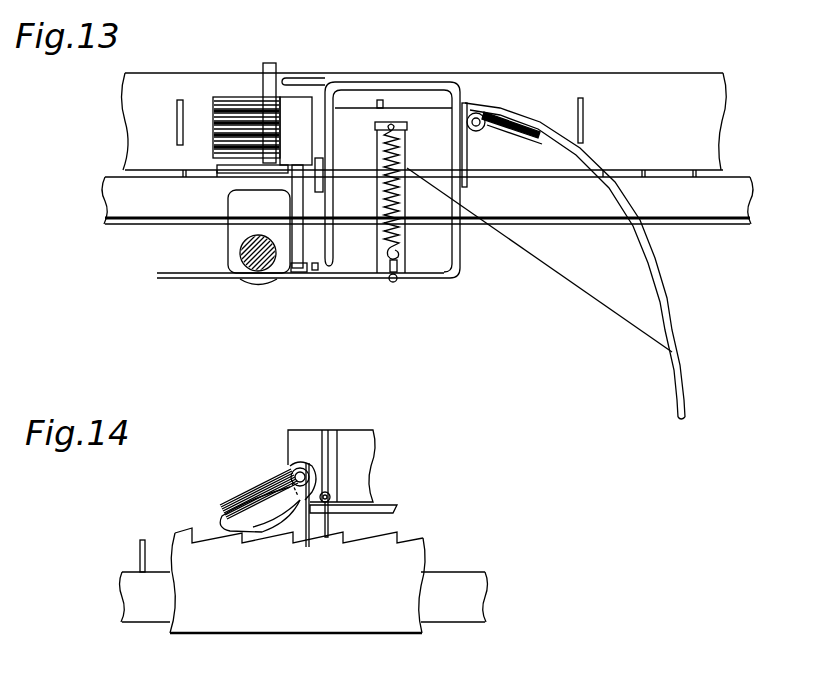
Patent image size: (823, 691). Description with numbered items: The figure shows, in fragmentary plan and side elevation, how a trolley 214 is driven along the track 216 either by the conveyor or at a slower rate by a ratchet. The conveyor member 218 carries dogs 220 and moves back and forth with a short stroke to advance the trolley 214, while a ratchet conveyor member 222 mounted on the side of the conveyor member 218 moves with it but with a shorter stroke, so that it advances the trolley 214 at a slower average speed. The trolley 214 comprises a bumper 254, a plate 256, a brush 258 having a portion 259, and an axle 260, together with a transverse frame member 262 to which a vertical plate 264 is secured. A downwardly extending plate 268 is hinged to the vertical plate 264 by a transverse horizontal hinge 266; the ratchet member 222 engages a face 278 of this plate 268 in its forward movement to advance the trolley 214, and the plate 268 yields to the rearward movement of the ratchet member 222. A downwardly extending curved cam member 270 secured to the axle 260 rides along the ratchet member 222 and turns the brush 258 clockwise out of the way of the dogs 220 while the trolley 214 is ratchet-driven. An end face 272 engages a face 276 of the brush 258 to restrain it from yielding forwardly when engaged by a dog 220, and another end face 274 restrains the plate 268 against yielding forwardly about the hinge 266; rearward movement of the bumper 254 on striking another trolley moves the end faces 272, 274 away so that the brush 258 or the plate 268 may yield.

In FIG. 13, the trolley 214 is at (219, 294).
In FIG. 13, the track 216 is at (707, 234).
In FIG. 13, the conveyor member 218 is at (680, 106).
In FIG. 14, the conveyor member 218 is at (470, 597).
In FIG. 13, the dog 220 is at (584, 135).
In FIG. 14, the dog 220 is at (138, 556).
In FIG. 13, the ratchet conveyor member 222 is at (160, 163).
In FIG. 14, the ratchet conveyor member 222 is at (288, 617).
In FIG. 13, the bumper 254 is at (672, 327).
In FIG. 13, the plate 256 is at (547, 207).
In FIG. 13, the brush 258 is at (298, 104).
In FIG. 14, the brush 258 is at (290, 468).
In FIG. 13, the portion 259 is at (276, 68).
In FIG. 13, the axle 260 is at (305, 247).
In FIG. 14, the axle 260 is at (307, 462).
In FIG. 13, the transverse frame member 262 is at (329, 118).
In FIG. 14, the transverse frame member 262 is at (335, 457).
In FIG. 13, the vertical plate 264 is at (323, 180).
In FIG. 14, the vertical plate 264 is at (325, 443).
In FIG. 14, the transverse horizontal hinge 266 is at (330, 497).
In FIG. 13, the downwardly extending plate 268 is at (330, 208).
In FIG. 14, the downwardly extending plate 268 is at (327, 530).
In FIG. 13, the curved cam member 270 is at (228, 171).
In FIG. 14, the curved cam member 270 is at (253, 525).
In FIG. 14, the end face 272 is at (323, 540).
In FIG. 14, the end face 274 is at (333, 518).
In FIG. 14, the face 276 is at (305, 530).
In FIG. 14, the face 278 is at (338, 523).